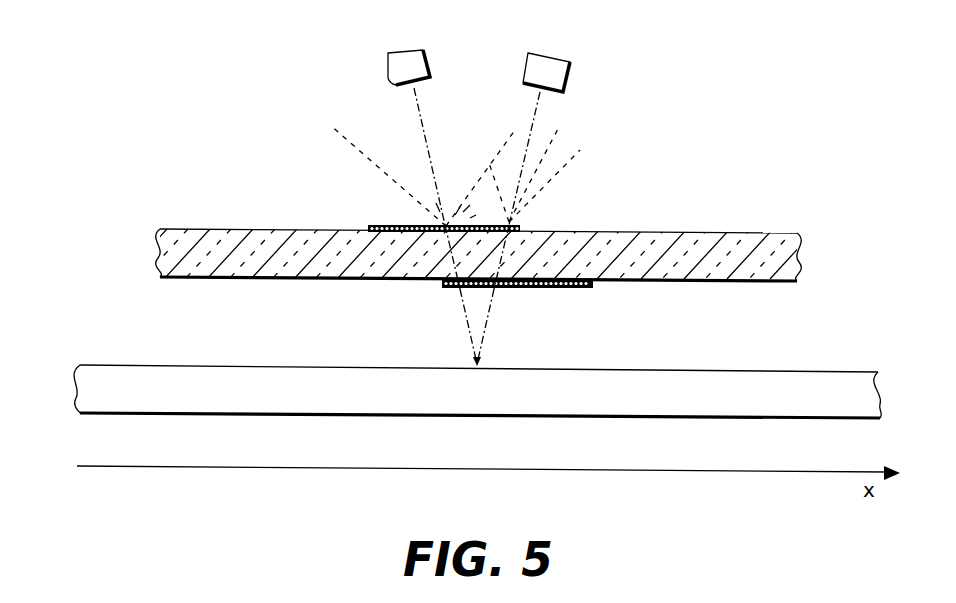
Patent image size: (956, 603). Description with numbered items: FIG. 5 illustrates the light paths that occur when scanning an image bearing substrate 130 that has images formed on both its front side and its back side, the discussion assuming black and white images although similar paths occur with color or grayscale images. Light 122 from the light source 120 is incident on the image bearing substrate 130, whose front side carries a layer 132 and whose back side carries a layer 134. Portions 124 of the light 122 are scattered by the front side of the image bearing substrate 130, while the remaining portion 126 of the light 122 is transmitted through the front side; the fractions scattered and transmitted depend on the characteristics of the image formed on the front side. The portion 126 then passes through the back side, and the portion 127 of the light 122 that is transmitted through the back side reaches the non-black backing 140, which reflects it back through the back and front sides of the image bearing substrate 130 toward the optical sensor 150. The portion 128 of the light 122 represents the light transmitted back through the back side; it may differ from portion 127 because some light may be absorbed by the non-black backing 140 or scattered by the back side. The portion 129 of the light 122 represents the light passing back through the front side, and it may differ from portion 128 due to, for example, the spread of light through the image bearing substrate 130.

The light source 120 is at (410, 52).
The light 122 is at (420, 102).
The scattered portions of the light 124 is at (355, 147).
The transmitted portion of the light 126 is at (447, 254).
The transmitted portion of the light through the back side 127 is at (466, 331).
The portion of the light transmitted through the back side 128 is at (505, 253).
The portion of the light passing through the front side 129 is at (516, 218).
The image bearing substrate 130 is at (703, 233).
The first coating layer 132 is at (380, 225).
The second coating layer 134 is at (547, 289).
The non-black backing 140 is at (826, 372).
The optical sensor 150 is at (557, 53).